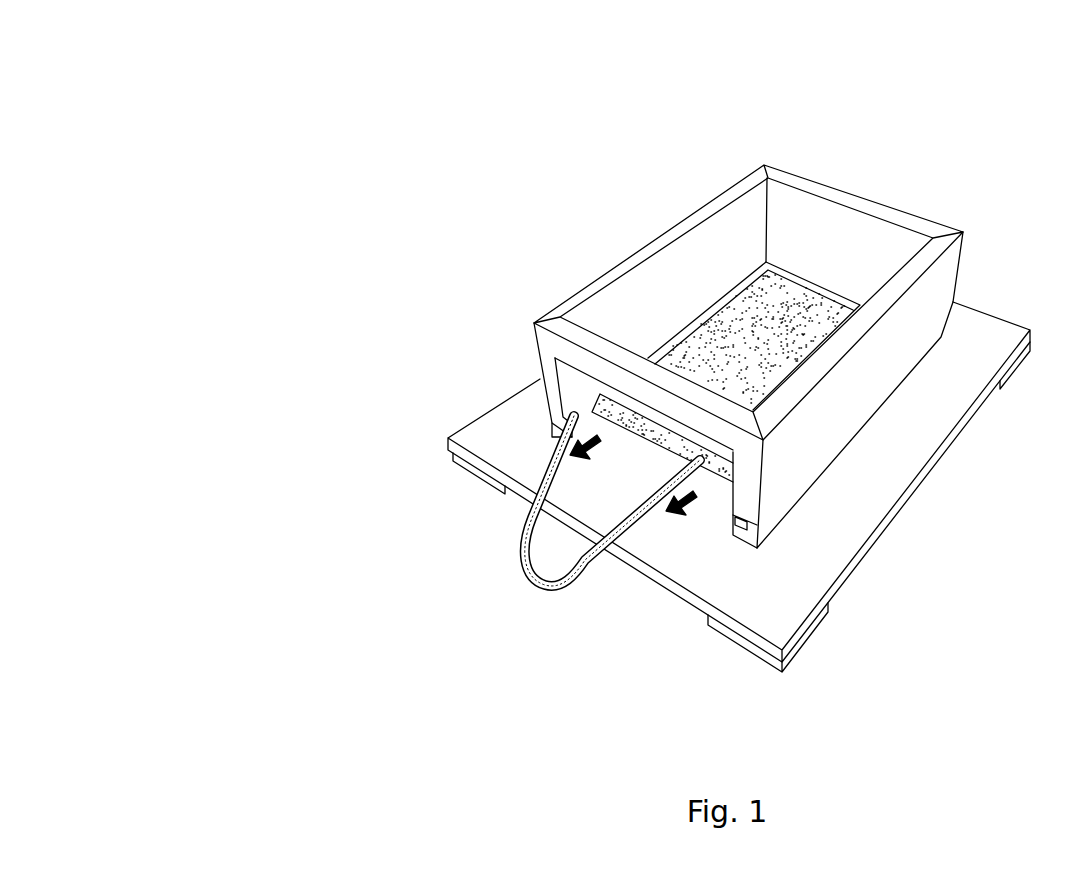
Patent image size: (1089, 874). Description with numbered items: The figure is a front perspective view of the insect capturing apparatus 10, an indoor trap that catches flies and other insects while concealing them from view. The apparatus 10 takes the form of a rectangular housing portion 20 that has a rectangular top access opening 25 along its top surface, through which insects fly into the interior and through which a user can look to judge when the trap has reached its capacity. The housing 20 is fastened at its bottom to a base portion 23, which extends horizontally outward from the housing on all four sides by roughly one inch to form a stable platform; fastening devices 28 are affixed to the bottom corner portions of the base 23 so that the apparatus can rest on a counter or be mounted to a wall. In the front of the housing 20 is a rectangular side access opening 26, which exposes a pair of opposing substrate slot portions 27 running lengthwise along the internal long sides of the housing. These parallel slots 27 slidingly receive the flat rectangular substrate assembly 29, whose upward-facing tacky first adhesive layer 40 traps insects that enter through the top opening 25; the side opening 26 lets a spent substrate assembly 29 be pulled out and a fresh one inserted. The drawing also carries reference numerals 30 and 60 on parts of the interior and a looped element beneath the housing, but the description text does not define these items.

The insect capturing apparatus 10 is at (258, 126).
The housing portion 20 is at (937, 283).
The base portion 23 is at (985, 347).
The top access opening 25 is at (610, 287).
The side access opening 26 is at (543, 376).
The substrate slot portions 27 is at (553, 423).
The fastening devices 28 is at (1010, 380).
The substrate assembly 29 is at (710, 300).
The tray edge 30 is at (758, 275).
The first adhesive layer 40 is at (778, 282).
The tube loop 60 is at (515, 558).